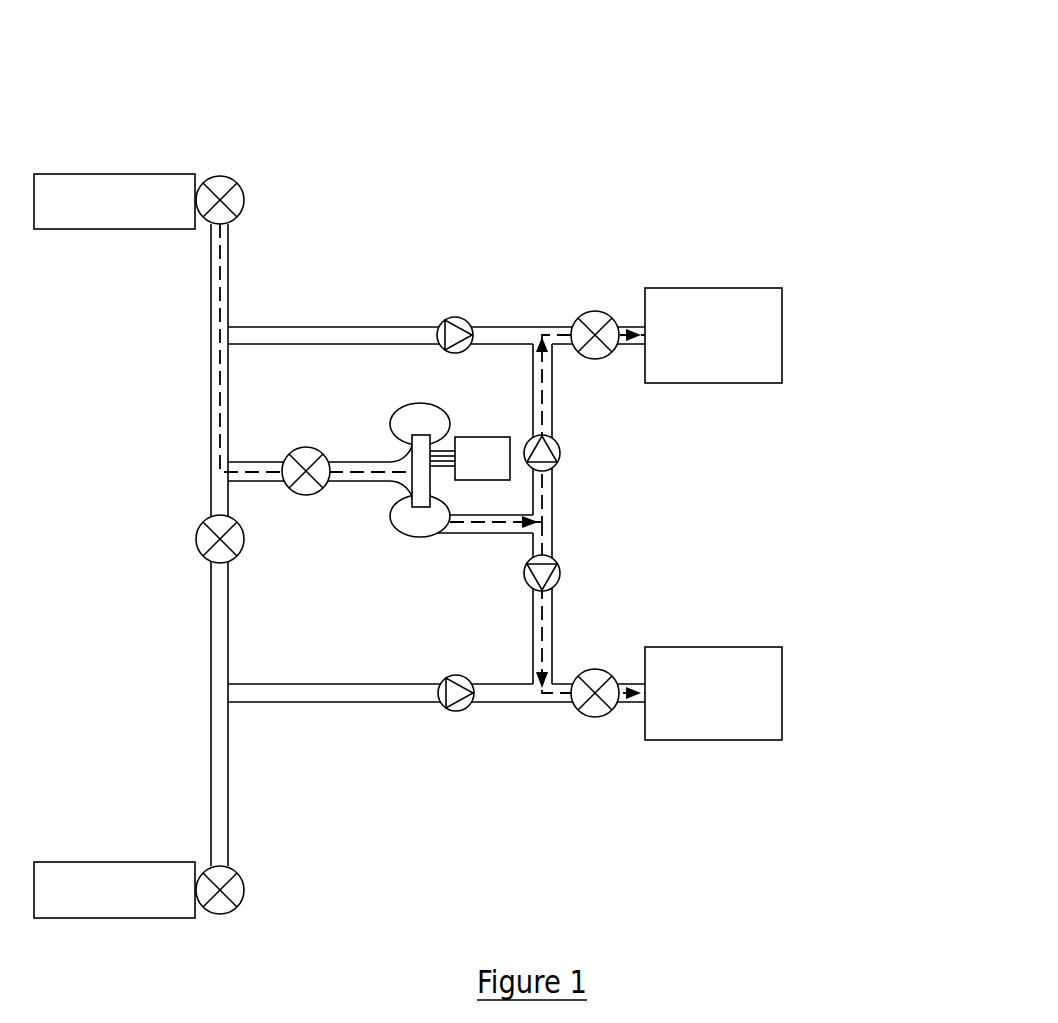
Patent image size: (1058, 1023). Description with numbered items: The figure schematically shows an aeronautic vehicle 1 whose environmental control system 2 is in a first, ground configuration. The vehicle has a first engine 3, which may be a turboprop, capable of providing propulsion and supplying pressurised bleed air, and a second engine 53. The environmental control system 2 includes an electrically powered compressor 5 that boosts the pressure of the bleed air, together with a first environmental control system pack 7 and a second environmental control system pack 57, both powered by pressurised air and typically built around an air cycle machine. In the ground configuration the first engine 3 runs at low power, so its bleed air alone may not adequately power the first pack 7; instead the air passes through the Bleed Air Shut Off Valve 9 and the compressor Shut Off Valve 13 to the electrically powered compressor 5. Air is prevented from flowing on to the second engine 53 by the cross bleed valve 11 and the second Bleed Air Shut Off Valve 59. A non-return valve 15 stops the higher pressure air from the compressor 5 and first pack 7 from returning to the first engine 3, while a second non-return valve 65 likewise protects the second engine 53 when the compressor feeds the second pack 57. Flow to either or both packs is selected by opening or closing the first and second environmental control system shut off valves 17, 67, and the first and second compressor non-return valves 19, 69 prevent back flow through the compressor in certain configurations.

The aeronautic vehicle 1 is at (763, 173).
The environmental control system 2 is at (513, 188).
The first engine 3 is at (80, 229).
The electrically powered compressor 5 is at (428, 414).
The first environmental control system pack 7 is at (728, 383).
The Bleed Air Shut Off Valve 9 is at (238, 181).
The cross bleed valve 11 is at (198, 530).
The compressor Shut Off Valve 13 is at (297, 452).
The non-return valve 15 is at (447, 318).
The first environmental control system shut off valve 17 is at (585, 313).
The first compressor non-return valve 19 is at (560, 458).
The second engine 53 is at (113, 862).
The second environmental control system pack 57 is at (725, 647).
The second Bleed Air Shut Off Valve 59 is at (244, 888).
The second non-return valve 65 is at (445, 705).
The second environmental control system shut off valve 67 is at (585, 716).
The second compressor non-return valve 69 is at (556, 560).